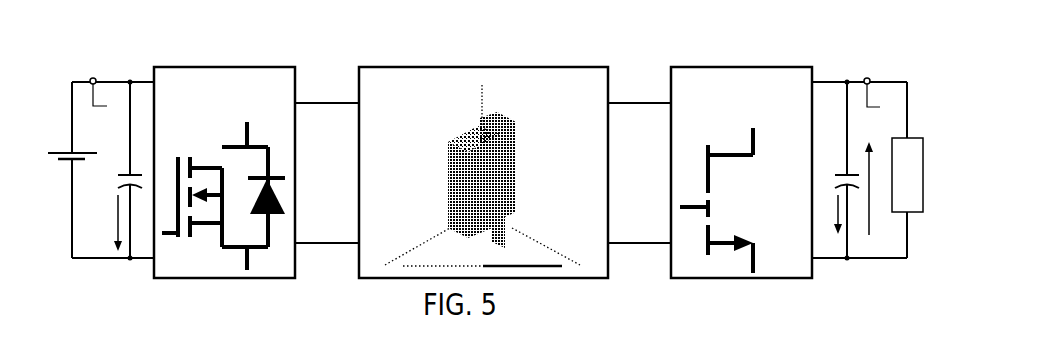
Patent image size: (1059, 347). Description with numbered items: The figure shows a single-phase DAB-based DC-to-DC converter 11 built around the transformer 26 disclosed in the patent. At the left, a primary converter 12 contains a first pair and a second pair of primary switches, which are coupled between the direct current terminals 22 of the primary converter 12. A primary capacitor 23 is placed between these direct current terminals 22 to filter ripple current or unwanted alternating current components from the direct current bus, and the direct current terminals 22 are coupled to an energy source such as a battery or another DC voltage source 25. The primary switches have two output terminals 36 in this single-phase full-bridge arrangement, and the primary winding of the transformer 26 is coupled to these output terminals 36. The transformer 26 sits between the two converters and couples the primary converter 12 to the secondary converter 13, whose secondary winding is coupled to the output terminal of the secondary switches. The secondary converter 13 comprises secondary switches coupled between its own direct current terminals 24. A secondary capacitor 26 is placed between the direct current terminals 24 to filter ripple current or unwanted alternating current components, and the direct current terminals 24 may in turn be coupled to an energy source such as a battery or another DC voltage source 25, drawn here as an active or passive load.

The single-phase DAB-based DC-to-DC converter 11 is at (177, 321).
The primary converter 12 is at (183, 66).
The secondary converter 13 is at (724, 66).
The direct current terminals 22 is at (81, 80).
The primary capacitor 23 is at (113, 177).
The direct current terminals 24 is at (892, 80).
The DC voltage source 25 is at (63, 160).
The transformer 26 is at (447, 94).
The output terminals 36 is at (329, 100).